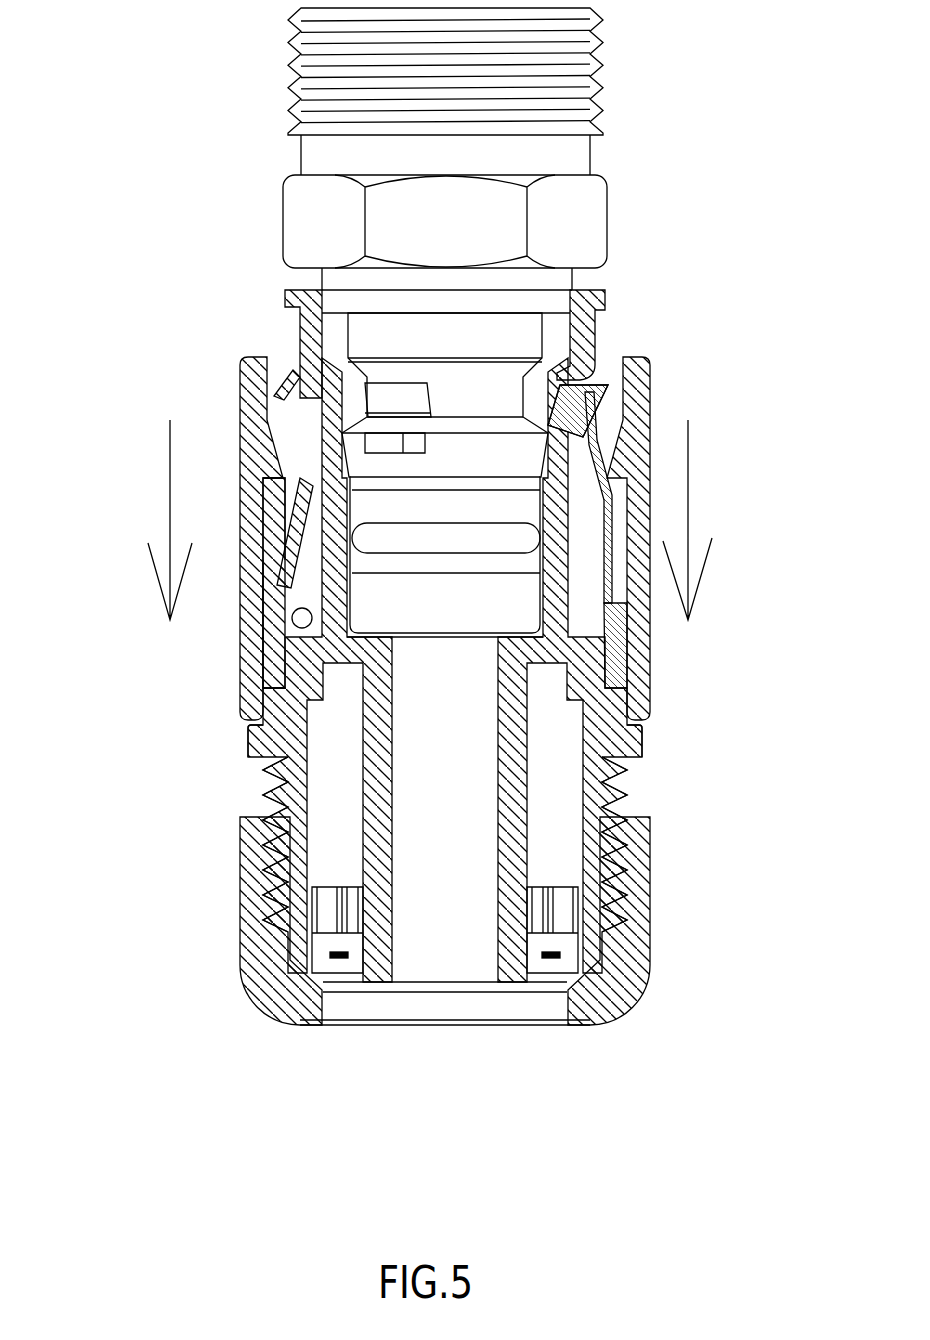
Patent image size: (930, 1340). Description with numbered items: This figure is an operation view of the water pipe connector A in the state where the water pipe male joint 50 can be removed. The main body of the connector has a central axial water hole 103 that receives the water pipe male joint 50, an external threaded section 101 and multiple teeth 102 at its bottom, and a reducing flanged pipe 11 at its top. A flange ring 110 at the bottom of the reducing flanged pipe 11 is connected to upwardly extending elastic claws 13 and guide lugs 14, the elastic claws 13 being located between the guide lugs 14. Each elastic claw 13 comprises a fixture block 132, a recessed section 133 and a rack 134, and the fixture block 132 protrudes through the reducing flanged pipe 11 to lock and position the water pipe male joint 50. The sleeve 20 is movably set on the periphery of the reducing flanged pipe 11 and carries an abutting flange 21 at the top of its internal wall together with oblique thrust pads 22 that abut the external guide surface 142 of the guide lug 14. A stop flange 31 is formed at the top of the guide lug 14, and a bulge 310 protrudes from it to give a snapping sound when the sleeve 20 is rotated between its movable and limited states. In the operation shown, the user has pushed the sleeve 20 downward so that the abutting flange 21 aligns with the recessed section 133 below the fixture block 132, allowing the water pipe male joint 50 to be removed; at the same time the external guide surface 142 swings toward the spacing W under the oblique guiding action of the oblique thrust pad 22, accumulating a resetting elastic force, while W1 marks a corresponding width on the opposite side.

The water pipe connector A is at (169, 318).
The water pipe male joint 50 is at (283, 210).
The axial water hole 103 is at (554, 332).
The sleeve 20 is at (242, 358).
The abutting flange 21 is at (613, 455).
The oblique thrust pad 22 is at (272, 500).
The stop flange 31 is at (302, 483).
The bulge 310 is at (275, 455).
The external guide surface 142 is at (262, 537).
The reducing flanged pipe 11 is at (262, 586).
The guide lug 14 is at (258, 623).
The spacing W is at (293, 628).
The width W1 is at (170, 462).
The elastic claw 13 is at (687, 529).
The fixture block 132 is at (575, 405).
The recessed section 133 is at (617, 490).
The rack 134 is at (683, 595).
The flange ring 110 is at (632, 740).
The external threaded section 101 is at (262, 782).
The teeth 102 is at (323, 917).